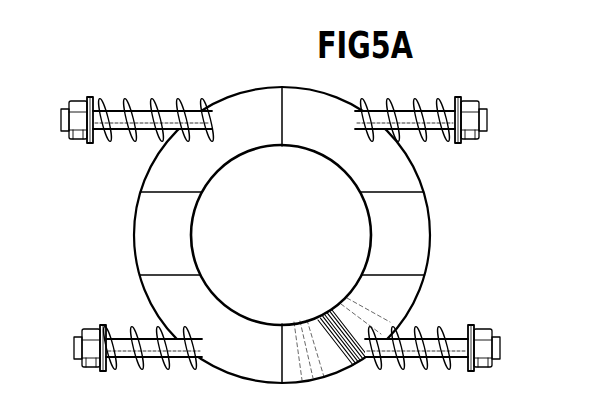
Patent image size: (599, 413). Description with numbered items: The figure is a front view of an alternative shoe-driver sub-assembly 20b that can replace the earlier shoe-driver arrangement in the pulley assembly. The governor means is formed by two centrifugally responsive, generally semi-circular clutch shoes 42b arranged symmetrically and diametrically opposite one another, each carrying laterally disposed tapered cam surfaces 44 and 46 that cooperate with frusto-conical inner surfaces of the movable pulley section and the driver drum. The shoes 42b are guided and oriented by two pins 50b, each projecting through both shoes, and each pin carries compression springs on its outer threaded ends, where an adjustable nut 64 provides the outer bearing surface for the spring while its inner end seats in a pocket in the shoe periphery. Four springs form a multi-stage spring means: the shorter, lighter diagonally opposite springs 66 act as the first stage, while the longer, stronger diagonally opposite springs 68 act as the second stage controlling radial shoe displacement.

The shoe-driver sub-assembly 20b is at (250, 68).
The clutch shoes 42b is at (200, 222).
The tapered cam surface 44 is at (167, 247).
The tapered cam surface 46 is at (364, 147).
The pins 50b is at (147, 100).
The adjustable nut 64 is at (85, 97).
The compression springs 66 is at (427, 142).
The compression springs 68 is at (138, 148).